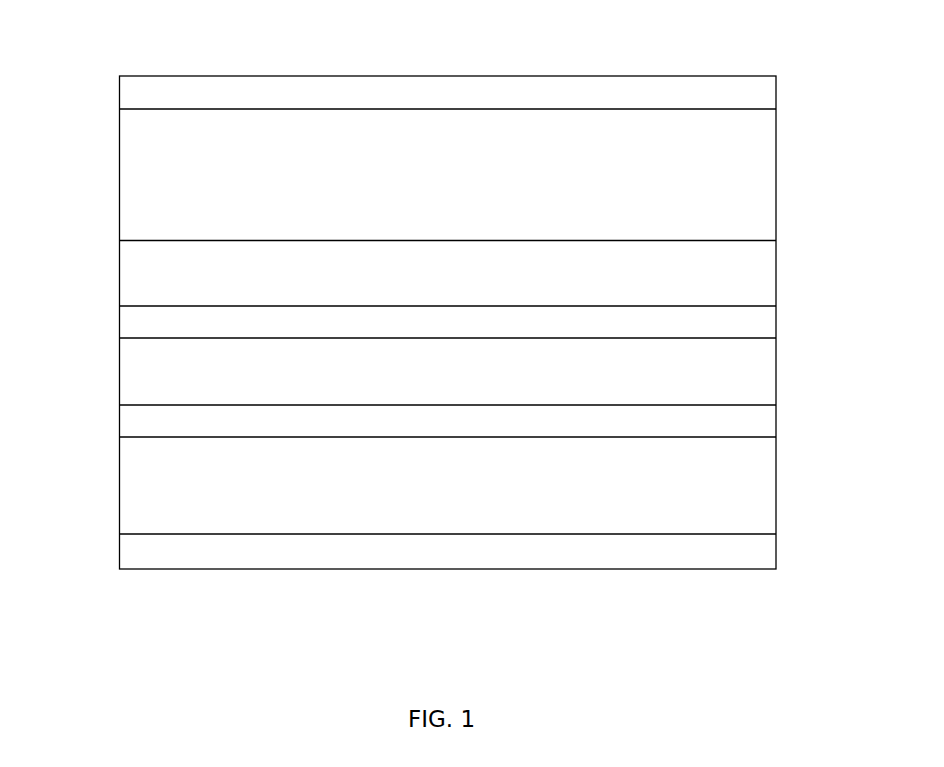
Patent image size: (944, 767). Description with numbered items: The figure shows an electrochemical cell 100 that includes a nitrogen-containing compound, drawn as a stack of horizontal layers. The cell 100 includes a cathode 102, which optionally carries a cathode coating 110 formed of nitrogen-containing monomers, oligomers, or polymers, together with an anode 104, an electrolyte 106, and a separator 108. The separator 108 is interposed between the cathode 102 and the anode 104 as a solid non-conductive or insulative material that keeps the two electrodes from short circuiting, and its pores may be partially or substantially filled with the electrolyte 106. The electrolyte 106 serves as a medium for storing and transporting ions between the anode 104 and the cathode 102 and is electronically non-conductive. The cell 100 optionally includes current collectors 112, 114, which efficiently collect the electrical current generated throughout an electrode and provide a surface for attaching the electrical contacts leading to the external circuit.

The electrochemical cell 100 is at (766, 60).
The cathode 102 is at (112, 406).
The anode 104 is at (757, 174).
The electrolyte 106 is at (757, 274).
The separator 108 is at (757, 323).
The cathode coating 110 is at (757, 421).
The current collector 112 is at (757, 551).
The current collector 114 is at (757, 91).